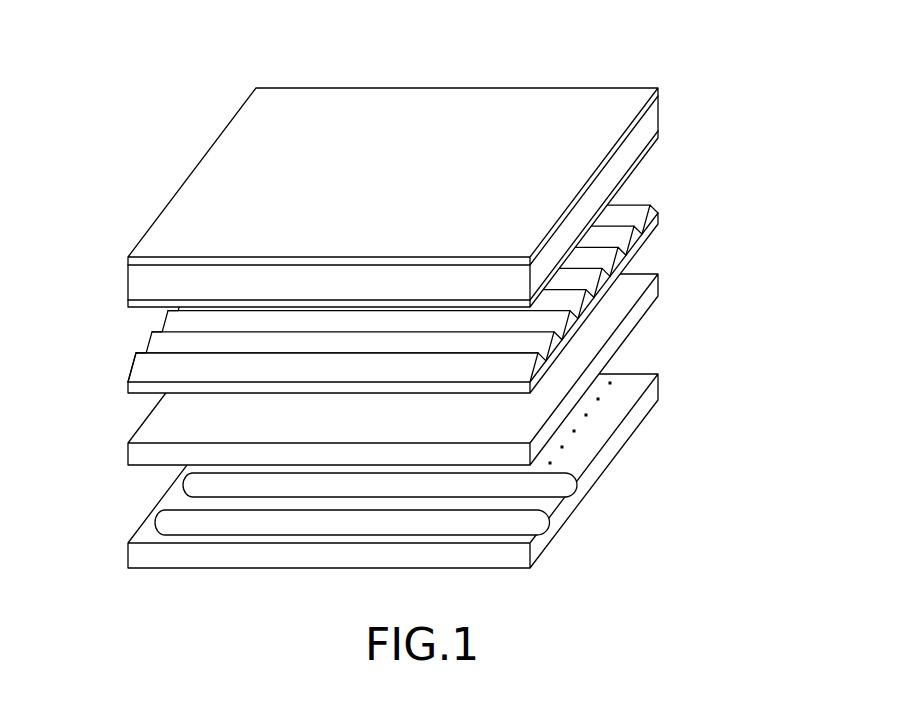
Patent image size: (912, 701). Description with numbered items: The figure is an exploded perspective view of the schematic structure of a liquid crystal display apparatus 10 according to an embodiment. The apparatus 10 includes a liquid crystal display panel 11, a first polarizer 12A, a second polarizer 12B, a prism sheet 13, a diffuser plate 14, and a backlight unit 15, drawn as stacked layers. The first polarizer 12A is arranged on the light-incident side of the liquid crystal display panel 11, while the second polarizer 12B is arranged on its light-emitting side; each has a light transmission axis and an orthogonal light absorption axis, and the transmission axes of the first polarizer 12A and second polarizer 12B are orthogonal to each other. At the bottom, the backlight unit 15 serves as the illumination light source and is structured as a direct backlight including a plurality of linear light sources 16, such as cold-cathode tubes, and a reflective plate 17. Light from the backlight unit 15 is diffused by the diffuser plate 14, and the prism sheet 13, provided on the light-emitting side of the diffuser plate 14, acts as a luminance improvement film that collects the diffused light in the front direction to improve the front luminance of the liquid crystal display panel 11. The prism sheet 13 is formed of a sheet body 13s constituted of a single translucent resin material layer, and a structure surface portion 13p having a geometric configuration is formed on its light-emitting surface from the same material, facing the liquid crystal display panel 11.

The liquid crystal display apparatus 10 is at (178, 58).
The liquid crystal display panel 11 is at (403, 197).
The first polarizer 12A is at (648, 147).
The second polarizer 12B is at (648, 110).
The prism sheet 13 is at (375, 299).
The structure surface portion 13p is at (160, 363).
The sheet body 13s is at (635, 253).
The diffuser plate 14 is at (122, 434).
The backlight unit 15 is at (672, 403).
The linear light sources 16 is at (173, 525).
The reflective plate 17 is at (135, 558).